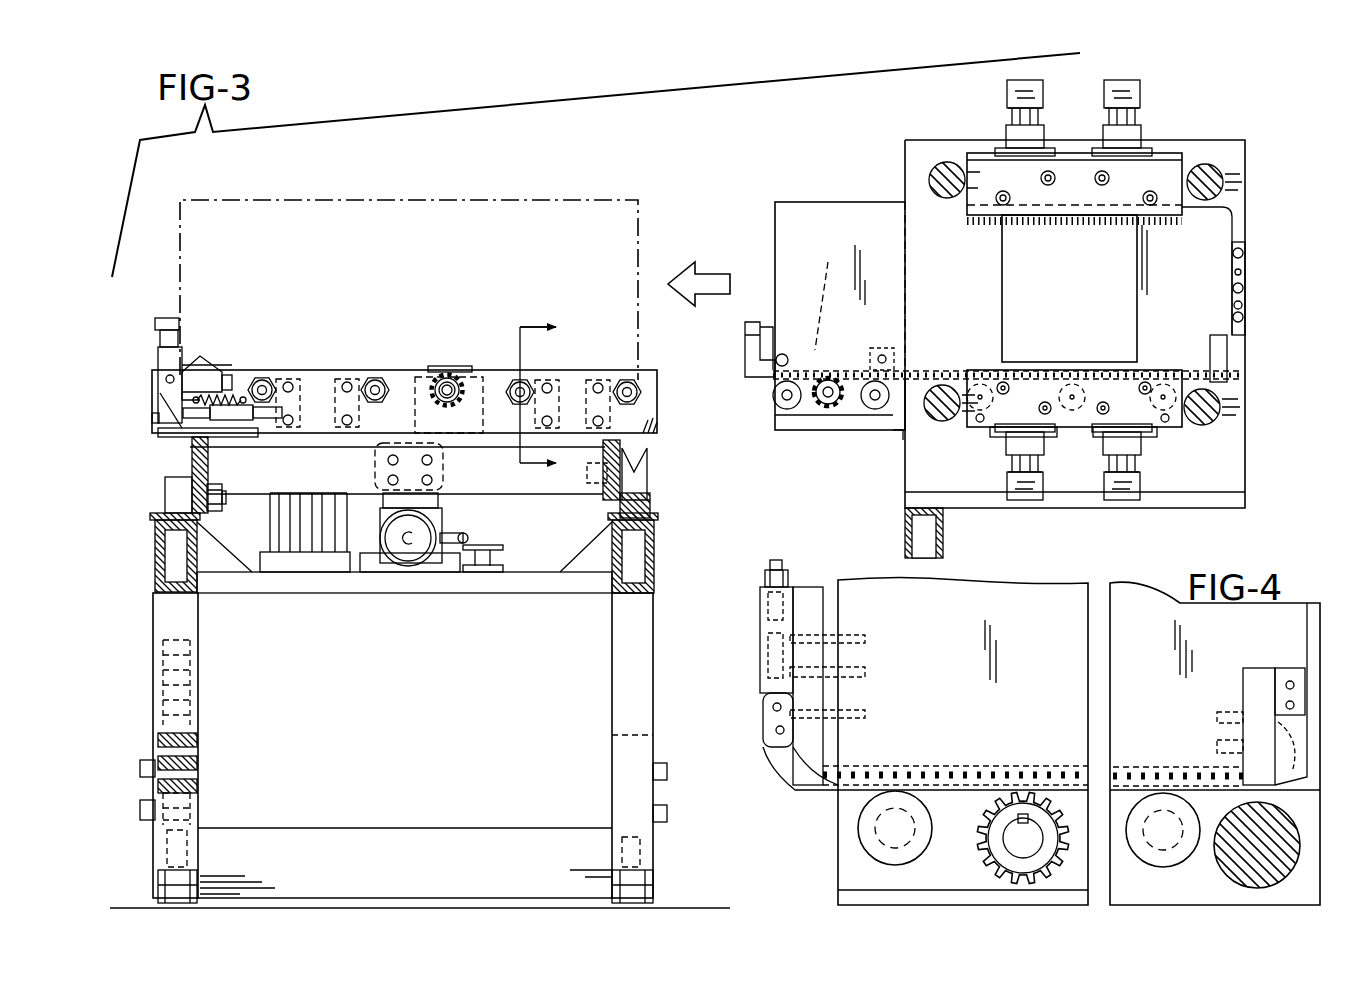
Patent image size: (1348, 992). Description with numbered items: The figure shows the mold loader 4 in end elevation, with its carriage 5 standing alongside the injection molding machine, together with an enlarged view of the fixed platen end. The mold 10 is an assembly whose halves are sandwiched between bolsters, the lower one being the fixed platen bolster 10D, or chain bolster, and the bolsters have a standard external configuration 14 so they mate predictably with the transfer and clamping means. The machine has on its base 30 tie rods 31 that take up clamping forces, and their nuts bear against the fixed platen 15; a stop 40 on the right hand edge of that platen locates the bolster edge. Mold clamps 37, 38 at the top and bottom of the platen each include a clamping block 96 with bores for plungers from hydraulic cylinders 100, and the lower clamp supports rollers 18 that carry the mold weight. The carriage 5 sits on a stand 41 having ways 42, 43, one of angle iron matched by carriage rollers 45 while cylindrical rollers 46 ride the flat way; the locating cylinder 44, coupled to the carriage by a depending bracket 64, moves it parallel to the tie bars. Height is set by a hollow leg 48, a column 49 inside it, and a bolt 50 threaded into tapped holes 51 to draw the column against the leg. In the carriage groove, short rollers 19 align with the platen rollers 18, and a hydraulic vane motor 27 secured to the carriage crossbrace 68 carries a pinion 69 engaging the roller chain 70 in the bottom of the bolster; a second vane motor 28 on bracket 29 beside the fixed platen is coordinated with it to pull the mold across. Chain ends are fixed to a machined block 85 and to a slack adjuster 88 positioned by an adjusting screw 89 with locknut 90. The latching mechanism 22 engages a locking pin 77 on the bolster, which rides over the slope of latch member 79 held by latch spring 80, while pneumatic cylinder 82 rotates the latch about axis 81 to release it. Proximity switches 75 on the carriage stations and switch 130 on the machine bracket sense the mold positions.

In FIG. 3, the mold loader 4 is at (146, 509).
In FIG. 3, the carriage 5 is at (92, 402).
In FIG. 3, the mold 10 is at (1084, 291).
In FIG. 3, the fixed platen bolster 10D is at (533, 205).
In FIG. 4, the fixed platen bolster 10D is at (1137, 583).
In FIG. 3, the external configuration 14 is at (632, 200).
In FIG. 3, the fixed platen 15 is at (905, 152).
In FIG. 4, the fixed platen 15 is at (1138, 888).
In FIG. 3, the rollers 18 is at (868, 405).
In FIG. 4, the rollers 18 is at (893, 798).
In FIG. 3, the short rollers 19 is at (384, 368).
In FIG. 3, the latching mechanism 22 is at (230, 368).
In FIG. 3, the hydraulic vane motor 27 is at (433, 368).
In FIG. 3, the vane motor 28 is at (815, 350).
In FIG. 3, the bracket 29 is at (821, 306).
In FIG. 3, the base 30 is at (903, 533).
In FIG. 3, the tie rods 31 is at (945, 165).
In FIG. 4, the tie rods 31 is at (1246, 870).
In FIG. 3, the mold clamp 37 is at (1168, 150).
In FIG. 3, the mold clamp 38 is at (1156, 434).
In FIG. 3, the stop 40 is at (1246, 278).
In FIG. 3, the stand 41 is at (150, 698).
In FIG. 3, the way 42 is at (156, 527).
In FIG. 3, the way 43 is at (652, 509).
In FIG. 3, the locating cylinder 44 is at (445, 520).
In FIG. 3, the carriage rollers 45 is at (650, 474).
In FIG. 3, the rollers 46 is at (174, 485).
In FIG. 3, the hollow leg 48 is at (158, 640).
In FIG. 3, the column 49 is at (190, 740).
In FIG. 3, the bolt 50 is at (145, 805).
In FIG. 3, the tapped holes 51 is at (195, 768).
In FIG. 3, the bracket 64 is at (432, 490).
In FIG. 3, the carriage crossbrace 68 is at (658, 425).
In FIG. 3, the pinion 69 is at (470, 380).
In FIG. 4, the pinion 69 is at (1003, 805).
In FIG. 3, the roller chain 70 is at (940, 367).
In FIG. 4, the roller chain 70 is at (1103, 757).
In FIG. 3, the proximity switches 75 is at (158, 340).
In FIG. 3, the locking pin 77 is at (192, 355).
In FIG. 3, the latch member 79 is at (200, 362).
In FIG. 3, the latch spring 80 is at (215, 403).
In FIG. 3, the axis 81 is at (166, 377).
In FIG. 3, the pneumatic cylinder 82 is at (238, 422).
In FIG. 3, the machined block 85 is at (1224, 350).
In FIG. 4, the machined block 85 is at (1251, 675).
In FIG. 3, the slack adjuster 88 is at (742, 345).
In FIG. 4, the slack adjuster 88 is at (759, 655).
In FIG. 4, the adjusting screw 89 is at (775, 562).
In FIG. 4, the locknut 90 is at (762, 600).
In FIG. 3, the clamping block 96 is at (1095, 199).
In FIG. 3, the hydraulic cylinders 100 is at (1040, 115).
In FIG. 3, the proximity switch 130 is at (885, 347).